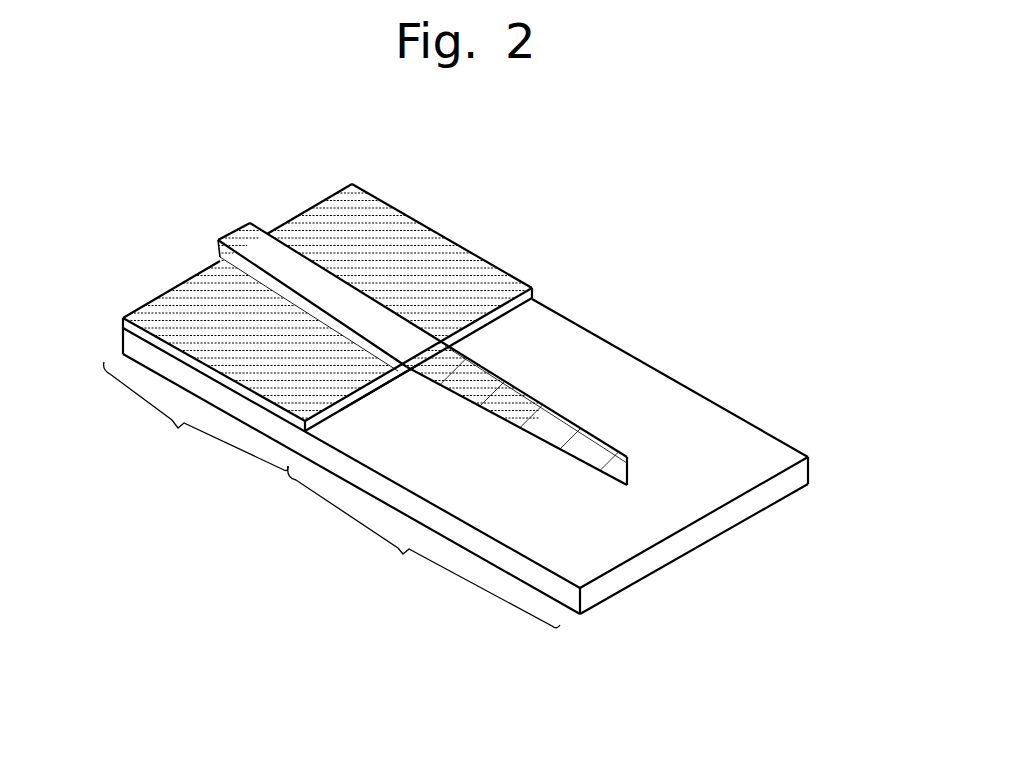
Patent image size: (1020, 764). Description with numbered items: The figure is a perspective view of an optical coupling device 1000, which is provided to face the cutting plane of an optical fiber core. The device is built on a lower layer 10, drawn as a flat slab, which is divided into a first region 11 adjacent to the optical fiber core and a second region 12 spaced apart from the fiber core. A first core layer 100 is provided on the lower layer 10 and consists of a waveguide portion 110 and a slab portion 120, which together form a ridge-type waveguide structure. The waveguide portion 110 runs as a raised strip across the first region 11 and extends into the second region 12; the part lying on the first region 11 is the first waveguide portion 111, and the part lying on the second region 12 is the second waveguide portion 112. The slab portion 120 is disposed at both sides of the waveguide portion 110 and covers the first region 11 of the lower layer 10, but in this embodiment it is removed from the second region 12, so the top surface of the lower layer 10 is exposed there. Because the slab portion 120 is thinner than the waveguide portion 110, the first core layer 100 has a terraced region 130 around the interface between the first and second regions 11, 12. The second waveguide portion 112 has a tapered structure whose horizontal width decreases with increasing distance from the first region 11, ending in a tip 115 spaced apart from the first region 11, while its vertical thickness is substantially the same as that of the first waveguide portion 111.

The optical coupling device 1000 is at (456, 376).
The lower layer 10 is at (456, 463).
The first region 11 is at (196, 416).
The second region 12 is at (424, 547).
The first core layer 100 is at (391, 304).
The waveguide portion 110 is at (440, 340).
The first waveguide portion 111 is at (413, 326).
The second waveguide portion 112 is at (503, 391).
The tip 115 is at (619, 435).
The slab portion 120 is at (437, 252).
The terraced region 130 is at (379, 400).